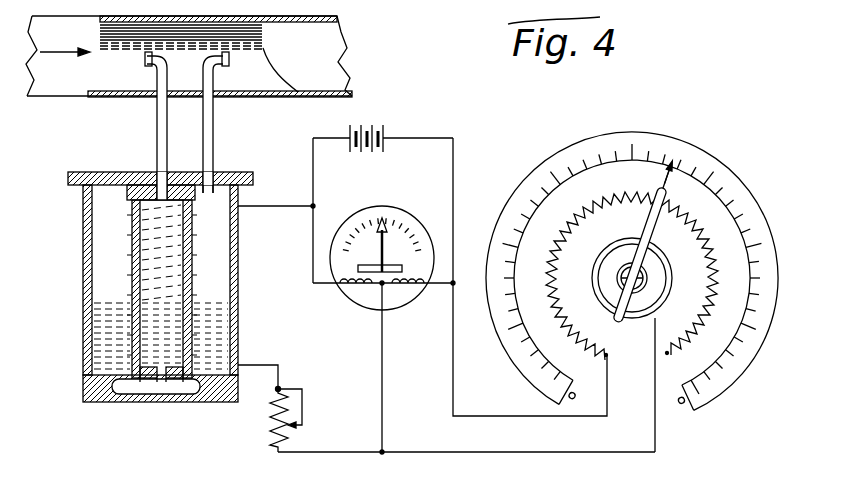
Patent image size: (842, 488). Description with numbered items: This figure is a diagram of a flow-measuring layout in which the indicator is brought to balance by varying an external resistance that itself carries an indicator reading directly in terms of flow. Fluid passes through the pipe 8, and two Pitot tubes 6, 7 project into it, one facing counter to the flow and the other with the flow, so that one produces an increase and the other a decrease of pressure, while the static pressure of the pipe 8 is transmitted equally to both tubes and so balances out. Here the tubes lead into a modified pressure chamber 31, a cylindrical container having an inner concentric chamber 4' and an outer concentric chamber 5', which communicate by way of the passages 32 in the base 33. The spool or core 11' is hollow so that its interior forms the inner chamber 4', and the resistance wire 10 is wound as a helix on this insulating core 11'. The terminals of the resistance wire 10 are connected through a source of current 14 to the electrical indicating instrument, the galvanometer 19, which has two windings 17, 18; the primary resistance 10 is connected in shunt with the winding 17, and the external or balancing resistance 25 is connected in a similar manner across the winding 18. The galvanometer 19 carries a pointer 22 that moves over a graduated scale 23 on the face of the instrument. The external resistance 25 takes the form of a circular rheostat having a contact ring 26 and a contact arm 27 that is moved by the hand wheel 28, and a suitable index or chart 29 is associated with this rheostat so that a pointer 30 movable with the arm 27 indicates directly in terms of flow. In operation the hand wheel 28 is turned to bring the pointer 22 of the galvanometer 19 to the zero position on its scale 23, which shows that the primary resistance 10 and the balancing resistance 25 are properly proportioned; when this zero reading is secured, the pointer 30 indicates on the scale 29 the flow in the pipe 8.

The inner concentric chamber 4' is at (122, 289).
The outer concentric chamber 5' is at (179, 280).
The Pitot tube 6 is at (152, 67).
The Pitot tube 7 is at (222, 68).
The pipe 8 is at (193, 45).
The resistance wire 10 is at (200, 274).
The spool or core 11' is at (91, 280).
The source of current 14 is at (372, 133).
The galvanometer winding 17 is at (364, 296).
The galvanometer winding 18 is at (407, 296).
The galvanometer 19 is at (385, 298).
The pointer 22 is at (375, 248).
The galvanometer 23 is at (410, 238).
The external resistance 25 is at (736, 370).
The contact ring 26 is at (667, 292).
The contact arm 27 is at (648, 232).
The hand wheel 28 is at (616, 279).
The index or chart 29 is at (690, 163).
The pointer 30 is at (665, 172).
The pressure chamber 31 is at (225, 172).
The passages 32 is at (170, 388).
The base 33 is at (101, 398).